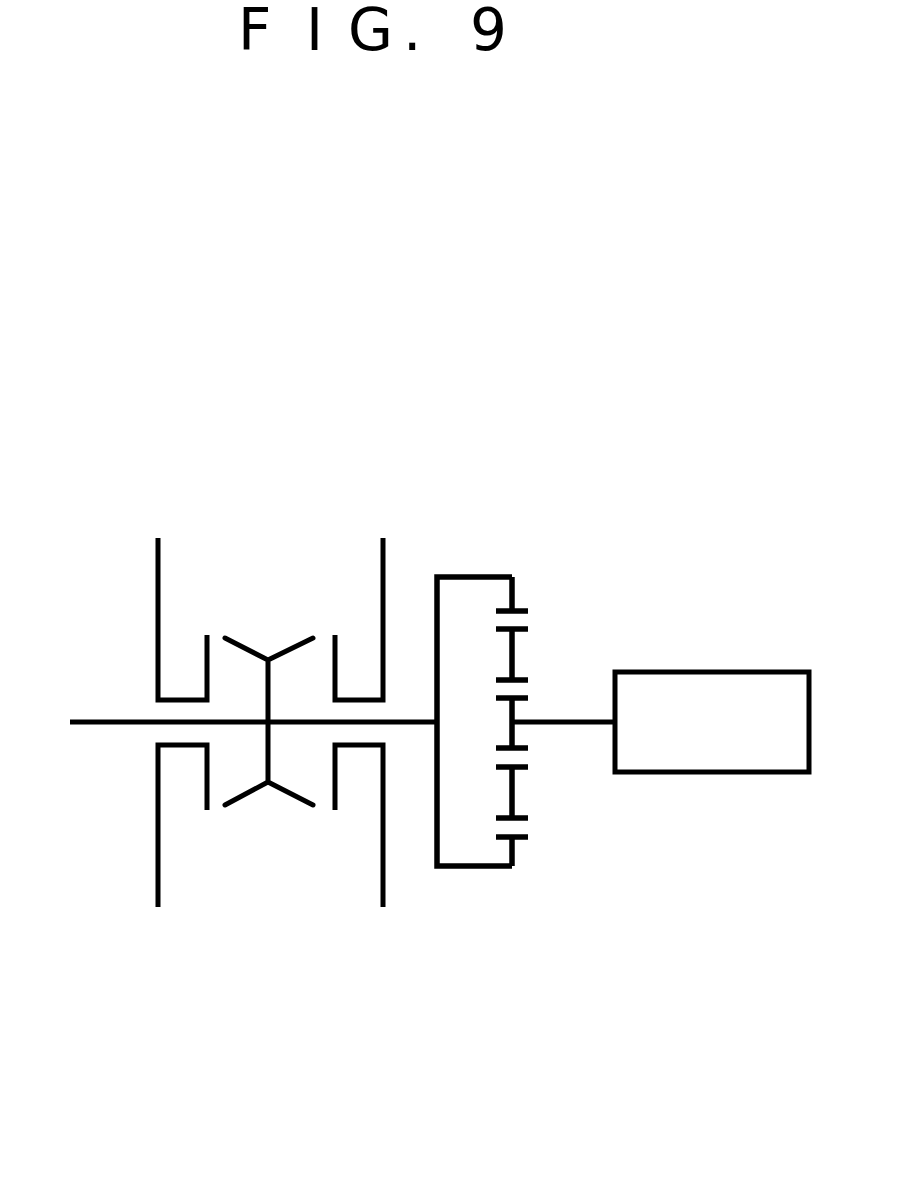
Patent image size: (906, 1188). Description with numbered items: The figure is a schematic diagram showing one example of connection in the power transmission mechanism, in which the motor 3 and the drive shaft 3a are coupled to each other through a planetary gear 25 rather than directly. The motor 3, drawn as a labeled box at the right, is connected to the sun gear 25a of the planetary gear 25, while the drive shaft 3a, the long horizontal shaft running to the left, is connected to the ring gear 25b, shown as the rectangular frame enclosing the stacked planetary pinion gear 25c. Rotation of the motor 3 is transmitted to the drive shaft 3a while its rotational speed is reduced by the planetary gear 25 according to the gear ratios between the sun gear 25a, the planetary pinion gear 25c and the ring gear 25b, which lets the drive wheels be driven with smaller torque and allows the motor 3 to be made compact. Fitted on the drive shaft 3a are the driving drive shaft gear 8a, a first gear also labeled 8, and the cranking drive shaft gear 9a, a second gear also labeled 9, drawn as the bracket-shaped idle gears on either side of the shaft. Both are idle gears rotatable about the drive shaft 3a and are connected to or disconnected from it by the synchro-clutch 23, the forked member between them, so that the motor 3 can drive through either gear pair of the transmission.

The motor 3 is at (743, 672).
The drive shaft 3a is at (85, 725).
The gear 8 is at (416, 778).
The driving drive shaft gear 8a is at (386, 890).
The gear 9 is at (122, 779).
The cranking drive shaft gear 9a is at (153, 895).
The synchro-clutch 23 is at (287, 797).
The planetary gear 25 is at (605, 644).
The sun gear 25a is at (527, 695).
The ring gear 25b is at (462, 577).
The planetary pinion gear 25c is at (513, 653).